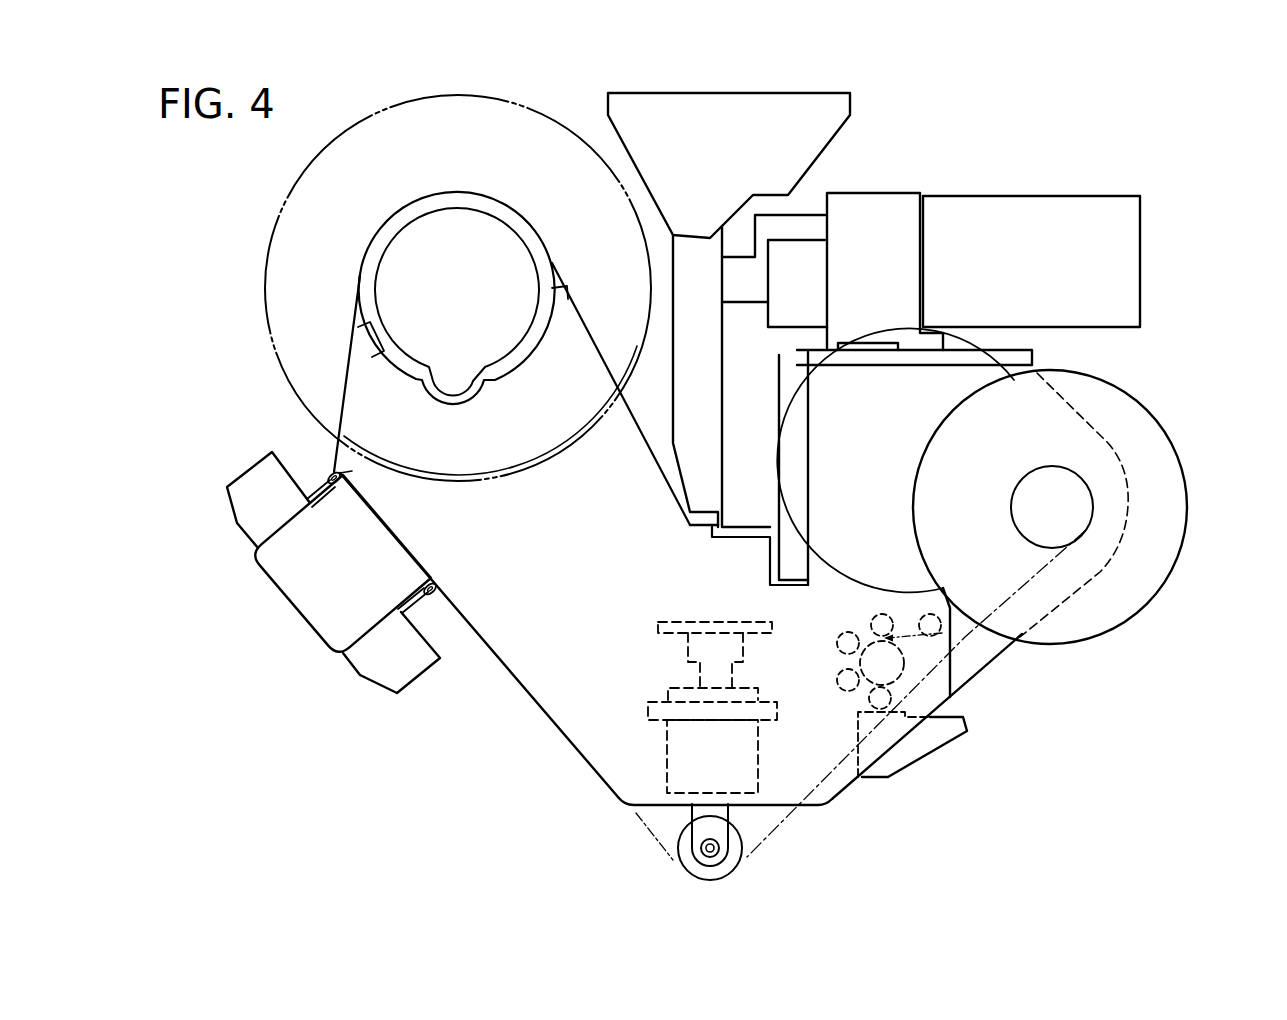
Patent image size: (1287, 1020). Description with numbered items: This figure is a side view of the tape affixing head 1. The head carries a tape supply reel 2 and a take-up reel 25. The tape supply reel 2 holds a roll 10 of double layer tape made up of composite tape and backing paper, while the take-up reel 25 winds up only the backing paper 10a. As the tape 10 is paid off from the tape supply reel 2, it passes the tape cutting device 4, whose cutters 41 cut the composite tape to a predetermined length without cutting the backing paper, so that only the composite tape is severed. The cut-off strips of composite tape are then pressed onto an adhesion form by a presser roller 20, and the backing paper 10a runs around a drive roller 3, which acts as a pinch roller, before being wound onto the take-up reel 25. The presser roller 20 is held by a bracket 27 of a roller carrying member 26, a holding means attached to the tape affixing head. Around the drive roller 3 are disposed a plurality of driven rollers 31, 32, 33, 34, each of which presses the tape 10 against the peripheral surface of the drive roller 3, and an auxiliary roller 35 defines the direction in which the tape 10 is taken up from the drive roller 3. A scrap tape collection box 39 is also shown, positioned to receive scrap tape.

The tape affixing head 1 is at (555, 708).
The tape supply reel 2 is at (270, 264).
The drive roller 3 is at (905, 658).
The tape cutting device 4 is at (268, 600).
The roll of double layer tape 10 is at (642, 826).
The backing paper 10a is at (772, 838).
The presser roller 20 is at (677, 855).
The take-up reel 25 is at (1180, 412).
The roller carrying member 26 is at (664, 745).
The bracket 27 is at (723, 842).
The driven roller 31 is at (863, 700).
The driven roller 32 is at (835, 675).
The driven roller 33 is at (847, 630).
The driven roller 34 is at (897, 612).
The auxiliary roller 35 is at (937, 608).
The scrap tape collection box 39 is at (957, 738).
The cutter 41 is at (322, 464).